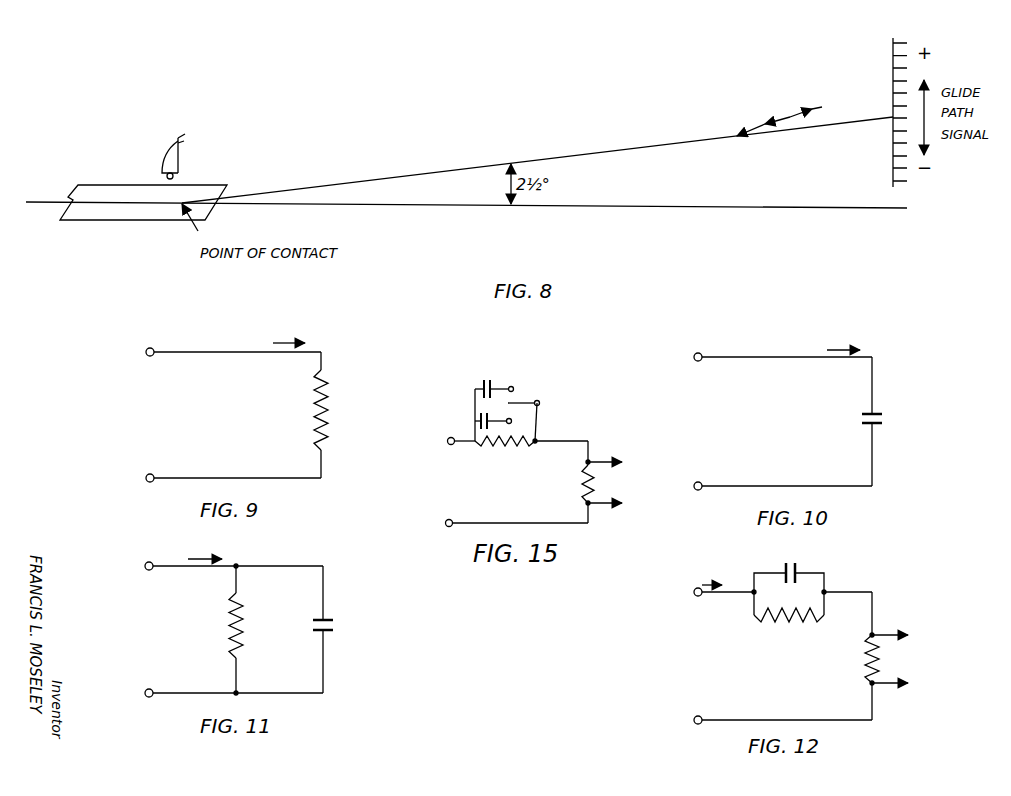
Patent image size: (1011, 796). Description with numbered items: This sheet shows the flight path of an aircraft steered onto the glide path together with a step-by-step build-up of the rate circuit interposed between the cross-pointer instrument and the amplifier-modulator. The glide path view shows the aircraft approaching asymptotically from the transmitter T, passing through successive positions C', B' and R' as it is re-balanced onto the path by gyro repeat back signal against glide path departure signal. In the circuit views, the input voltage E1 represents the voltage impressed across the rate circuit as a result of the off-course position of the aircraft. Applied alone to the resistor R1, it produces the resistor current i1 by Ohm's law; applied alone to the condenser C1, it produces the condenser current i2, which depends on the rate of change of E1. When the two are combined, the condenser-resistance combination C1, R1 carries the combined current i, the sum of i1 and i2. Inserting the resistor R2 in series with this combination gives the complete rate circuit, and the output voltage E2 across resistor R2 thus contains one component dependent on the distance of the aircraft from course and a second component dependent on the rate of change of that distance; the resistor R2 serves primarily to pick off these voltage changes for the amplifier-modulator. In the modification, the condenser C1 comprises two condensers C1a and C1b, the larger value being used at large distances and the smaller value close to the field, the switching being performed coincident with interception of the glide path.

In FIG. 8, the glide path transmitter T is at (188, 150).
In FIG. 8, the point C' on glide path C' is at (751, 124).
In FIG. 8, the point B' on glide path B' is at (774, 110).
In FIG. 8, the point R' on glide path R' is at (805, 102).
In FIG. 9, the input voltage E1 is at (140, 415).
In FIG. 10, the input voltage E1 is at (688, 421).
In FIG. 11, the input voltage E1 is at (137, 629).
In FIG. 12, the input voltage E1 is at (692, 656).
In FIG. 15, the input voltage E1 is at (448, 482).
In FIG. 12, the output voltage E2 is at (890, 659).
In FIG. 15, the output voltage E2 is at (607, 482).
In FIG. 9, the resistor R1 is at (334, 410).
In FIG. 11, the resistor R1 is at (226, 625).
In FIG. 12, the resistor R1 is at (789, 627).
In FIG. 15, the resistor R1 is at (505, 452).
In FIG. 12, the resistor R2 is at (860, 659).
In FIG. 15, the resistor R2 is at (576, 484).
In FIG. 10, the condenser C1 is at (884, 421).
In FIG. 11, the condenser C1 is at (333, 627).
In FIG. 12, the condenser C1 is at (801, 568).
In FIG. 15, the condenser C1a is at (494, 378).
In FIG. 15, the condenser C1b is at (476, 423).
In FIG. 11, the combined current i is at (209, 556).
In FIG. 12, the combined current i is at (712, 576).
In FIG. 9, the resistor current i1 is at (299, 343).
In FIG. 10, the condenser current i2 is at (853, 349).